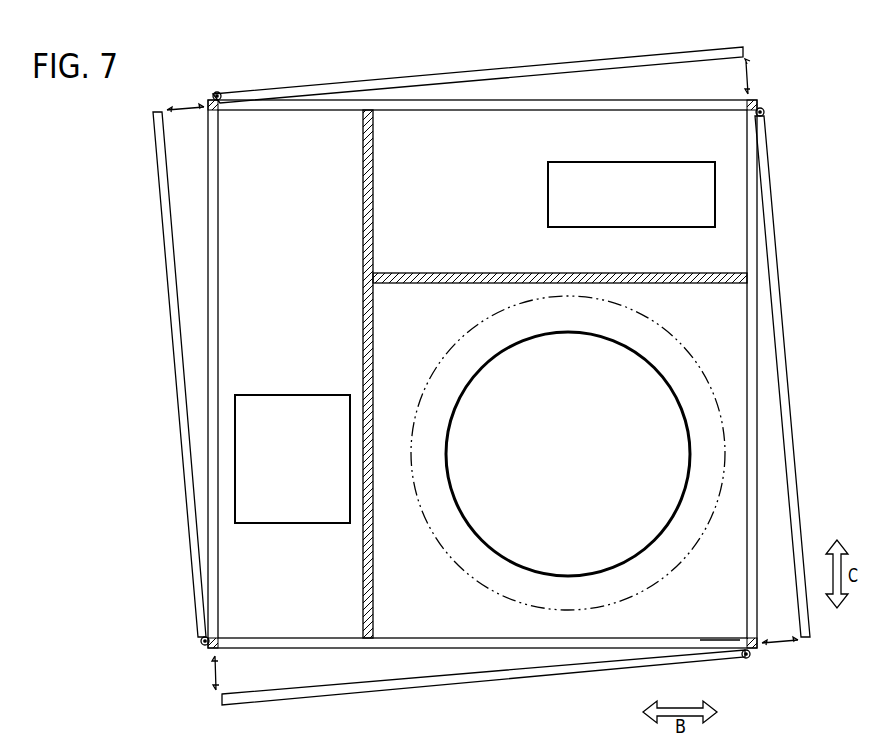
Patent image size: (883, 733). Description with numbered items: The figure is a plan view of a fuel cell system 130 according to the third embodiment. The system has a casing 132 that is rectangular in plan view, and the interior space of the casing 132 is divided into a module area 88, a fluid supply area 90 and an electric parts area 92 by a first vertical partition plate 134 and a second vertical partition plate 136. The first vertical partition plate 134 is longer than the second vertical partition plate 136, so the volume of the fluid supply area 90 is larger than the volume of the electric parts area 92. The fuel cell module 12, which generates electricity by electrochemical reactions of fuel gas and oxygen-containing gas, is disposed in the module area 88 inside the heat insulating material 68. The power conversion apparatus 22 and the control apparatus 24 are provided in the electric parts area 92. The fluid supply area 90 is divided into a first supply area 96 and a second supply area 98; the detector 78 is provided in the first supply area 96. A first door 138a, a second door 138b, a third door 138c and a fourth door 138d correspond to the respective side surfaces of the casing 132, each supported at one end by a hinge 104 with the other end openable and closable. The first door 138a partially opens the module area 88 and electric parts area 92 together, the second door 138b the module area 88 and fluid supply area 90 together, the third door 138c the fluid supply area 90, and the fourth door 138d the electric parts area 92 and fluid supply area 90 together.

The fuel cell system 130 is at (74, 120).
The hinge 104 is at (218, 92).
The fourth door 138d is at (462, 72).
The first door 138a is at (789, 351).
The third door 138c is at (181, 404).
The second door 138b is at (504, 685).
The casing 132 is at (762, 93).
The first vertical partition plate 134 is at (363, 578).
The second vertical partition plate 136 is at (436, 273).
The electric parts area 92 is at (668, 143).
The control apparatus 24 is at (631, 212).
The power conversion apparatus 22 is at (601, 228).
The fuel cell module 12 is at (603, 375).
The heat insulating material 68 is at (646, 591).
The detector 78 is at (290, 525).
The fluid supply area 90 is at (293, 447).
The first supply area 96 is at (293, 447).
The second supply area 98 is at (261, 622).
The module area 88 is at (717, 610).